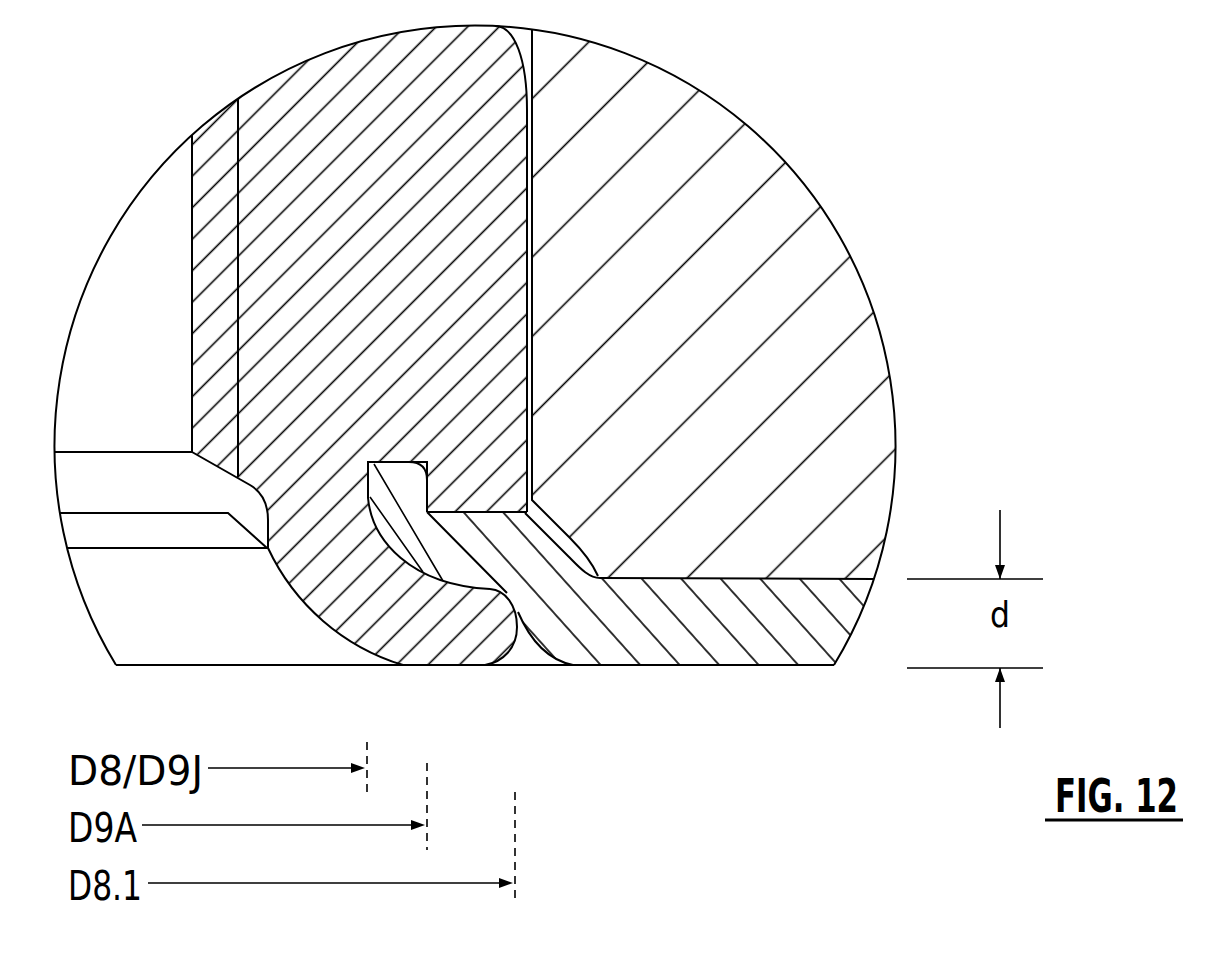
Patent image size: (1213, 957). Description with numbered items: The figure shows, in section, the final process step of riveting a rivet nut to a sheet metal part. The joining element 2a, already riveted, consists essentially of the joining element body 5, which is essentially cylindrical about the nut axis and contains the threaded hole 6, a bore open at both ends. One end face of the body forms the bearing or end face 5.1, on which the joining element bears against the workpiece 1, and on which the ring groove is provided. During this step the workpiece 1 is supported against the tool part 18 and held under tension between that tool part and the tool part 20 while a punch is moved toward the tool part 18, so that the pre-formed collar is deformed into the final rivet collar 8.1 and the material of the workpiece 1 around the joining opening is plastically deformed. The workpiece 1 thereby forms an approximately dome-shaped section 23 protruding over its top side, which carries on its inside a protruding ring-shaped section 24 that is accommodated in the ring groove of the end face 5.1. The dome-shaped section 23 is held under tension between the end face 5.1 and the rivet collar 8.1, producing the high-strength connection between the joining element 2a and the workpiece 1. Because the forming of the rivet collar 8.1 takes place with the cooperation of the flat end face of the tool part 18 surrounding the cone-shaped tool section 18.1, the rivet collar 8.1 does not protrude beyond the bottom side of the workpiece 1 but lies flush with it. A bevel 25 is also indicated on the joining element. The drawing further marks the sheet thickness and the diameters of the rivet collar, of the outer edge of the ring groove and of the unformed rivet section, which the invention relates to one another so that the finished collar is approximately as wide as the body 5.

The workpiece 1 is at (745, 593).
The joining element 2a is at (553, 213).
The joining element body 5 is at (480, 278).
The bearing or end face 5.1 is at (475, 512).
The threaded hole 6 is at (190, 354).
The rivet collar 8.1 is at (445, 637).
The tool part 18 is at (318, 672).
The cone-shaped tool section 18.1 is at (250, 647).
The tool part 20 is at (877, 410).
The dome-shaped section 23 is at (480, 553).
The ring-shaped section 24 is at (412, 477).
The bevel 25 is at (562, 530).